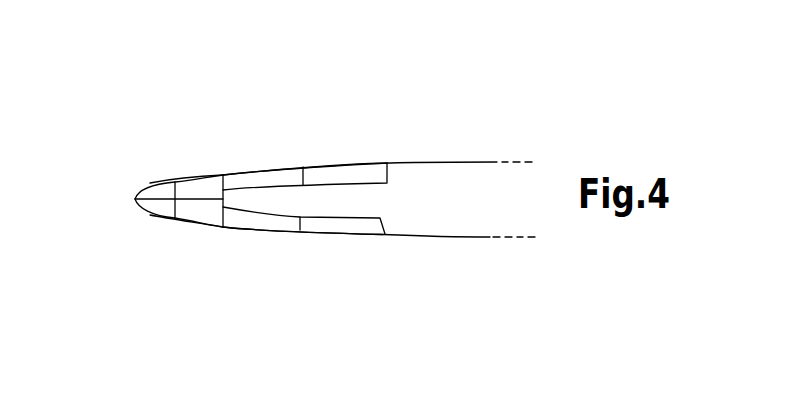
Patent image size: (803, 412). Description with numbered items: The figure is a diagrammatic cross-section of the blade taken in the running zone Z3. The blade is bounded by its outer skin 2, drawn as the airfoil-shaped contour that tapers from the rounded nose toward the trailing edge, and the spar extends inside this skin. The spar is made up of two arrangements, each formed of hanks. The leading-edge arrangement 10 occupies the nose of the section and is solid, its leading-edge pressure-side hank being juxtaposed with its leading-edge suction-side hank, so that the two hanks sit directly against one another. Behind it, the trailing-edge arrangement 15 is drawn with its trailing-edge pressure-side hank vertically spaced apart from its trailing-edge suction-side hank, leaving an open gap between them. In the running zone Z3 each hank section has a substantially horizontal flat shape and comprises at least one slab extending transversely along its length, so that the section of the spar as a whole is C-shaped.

The outer skin 2 is at (450, 162).
The leading-edge arrangement 10 is at (150, 182).
The trailing-edge arrangement 15 is at (359, 163).
The running zone Z3 is at (260, 272).